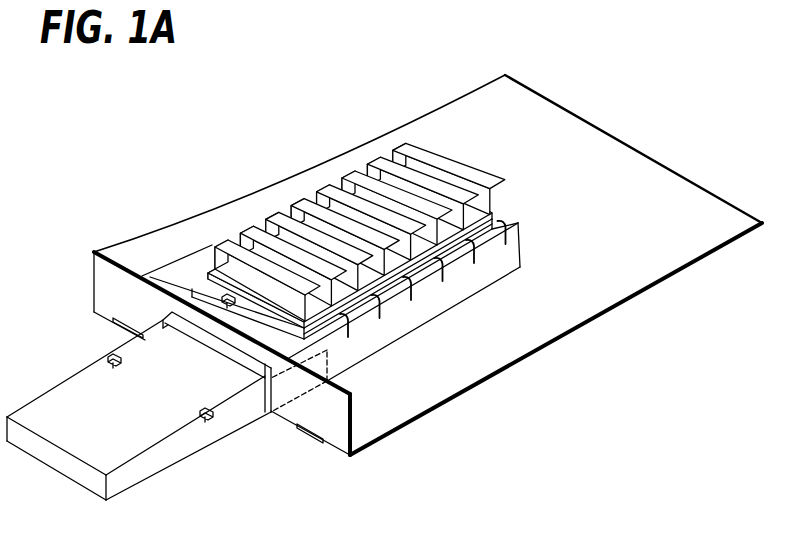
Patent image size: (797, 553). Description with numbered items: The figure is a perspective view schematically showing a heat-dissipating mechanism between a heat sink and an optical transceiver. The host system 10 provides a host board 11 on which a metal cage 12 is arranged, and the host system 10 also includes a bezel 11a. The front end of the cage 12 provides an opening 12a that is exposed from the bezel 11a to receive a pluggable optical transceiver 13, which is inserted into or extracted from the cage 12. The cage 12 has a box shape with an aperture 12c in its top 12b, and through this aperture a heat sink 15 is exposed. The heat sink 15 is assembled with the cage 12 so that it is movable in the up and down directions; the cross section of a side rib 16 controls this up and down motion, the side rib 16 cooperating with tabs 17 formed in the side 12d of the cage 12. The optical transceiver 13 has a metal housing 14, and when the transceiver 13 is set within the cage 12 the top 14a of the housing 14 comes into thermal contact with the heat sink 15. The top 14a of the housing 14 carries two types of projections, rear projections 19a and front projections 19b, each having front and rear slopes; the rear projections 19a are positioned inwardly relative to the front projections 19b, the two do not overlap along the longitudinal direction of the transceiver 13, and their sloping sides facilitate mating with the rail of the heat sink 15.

The host system 10 is at (253, 170).
The host board 11 is at (543, 112).
The bezel 11a is at (103, 276).
The metal cage 12 is at (375, 285).
The opening 12a is at (268, 413).
The top 12b is at (518, 223).
The aperture 12c is at (500, 222).
The side 12d is at (467, 283).
The pluggable optical transceiver 13 is at (156, 424).
The metal housing 14 is at (156, 406).
The top of the housing 14a is at (153, 365).
The heat sink 15 is at (432, 158).
The side rib 16 is at (350, 320).
The tabs 17 is at (412, 296).
The rear projections 19a is at (235, 301).
The front projections 19b is at (115, 362).